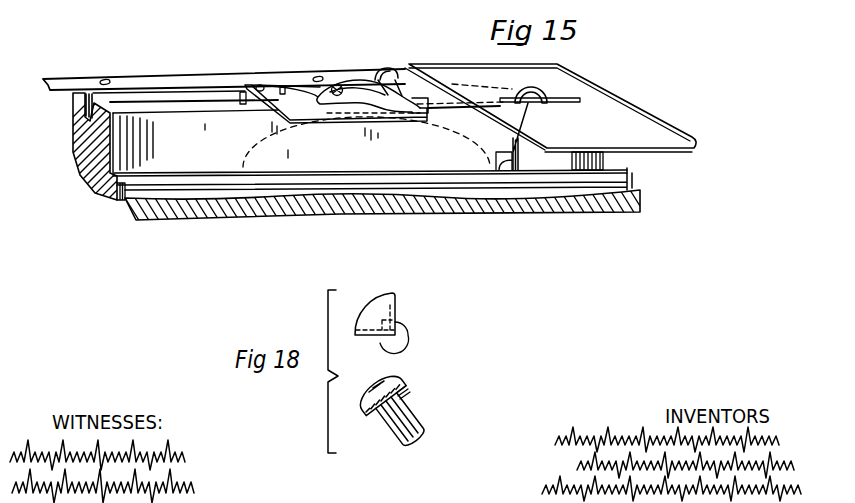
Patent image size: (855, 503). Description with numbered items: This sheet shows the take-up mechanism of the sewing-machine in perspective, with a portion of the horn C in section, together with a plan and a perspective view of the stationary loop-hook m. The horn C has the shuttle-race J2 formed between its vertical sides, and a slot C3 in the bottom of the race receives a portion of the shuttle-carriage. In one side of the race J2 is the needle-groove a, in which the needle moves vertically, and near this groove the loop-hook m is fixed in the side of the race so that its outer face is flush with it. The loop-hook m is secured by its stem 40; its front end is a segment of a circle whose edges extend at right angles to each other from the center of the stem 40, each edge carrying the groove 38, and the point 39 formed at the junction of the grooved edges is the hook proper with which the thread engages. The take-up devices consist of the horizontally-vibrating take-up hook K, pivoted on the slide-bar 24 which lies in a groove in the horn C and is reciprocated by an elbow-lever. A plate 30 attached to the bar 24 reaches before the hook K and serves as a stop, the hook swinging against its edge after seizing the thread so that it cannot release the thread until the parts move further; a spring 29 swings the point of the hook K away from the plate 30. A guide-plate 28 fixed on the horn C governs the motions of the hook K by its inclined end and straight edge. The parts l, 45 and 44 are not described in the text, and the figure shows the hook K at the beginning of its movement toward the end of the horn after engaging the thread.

In FIG. 15, the guide-plate 28 is at (166, 80).
In FIG. 15, the horn C is at (72, 157).
In FIG. 15, the slot C3 is at (116, 203).
In FIG. 15, the shuttle-race J2 is at (360, 133).
In FIG. 15, the hinge leaf l is at (550, 108).
In FIG. 15, the hinge knuckle 45 is at (527, 94).
In FIG. 15, the needle-groove a is at (521, 157).
In FIG. 15, the loop-hook m is at (500, 153).
In FIG. 18, the loop-hook m is at (385, 298).
In FIG. 15, the plate 30 is at (336, 104).
In FIG. 15, the take-up hook K is at (348, 90).
In FIG. 15, the spring 29 is at (268, 85).
In FIG. 15, the knuckle 44 is at (441, 110).
In FIG. 15, the slide-bar 24 is at (246, 96).
In FIG. 18, the point 39 is at (410, 330).
In FIG. 18, the stem 40 is at (392, 339).
In FIG. 18, the groove 38 is at (400, 385).